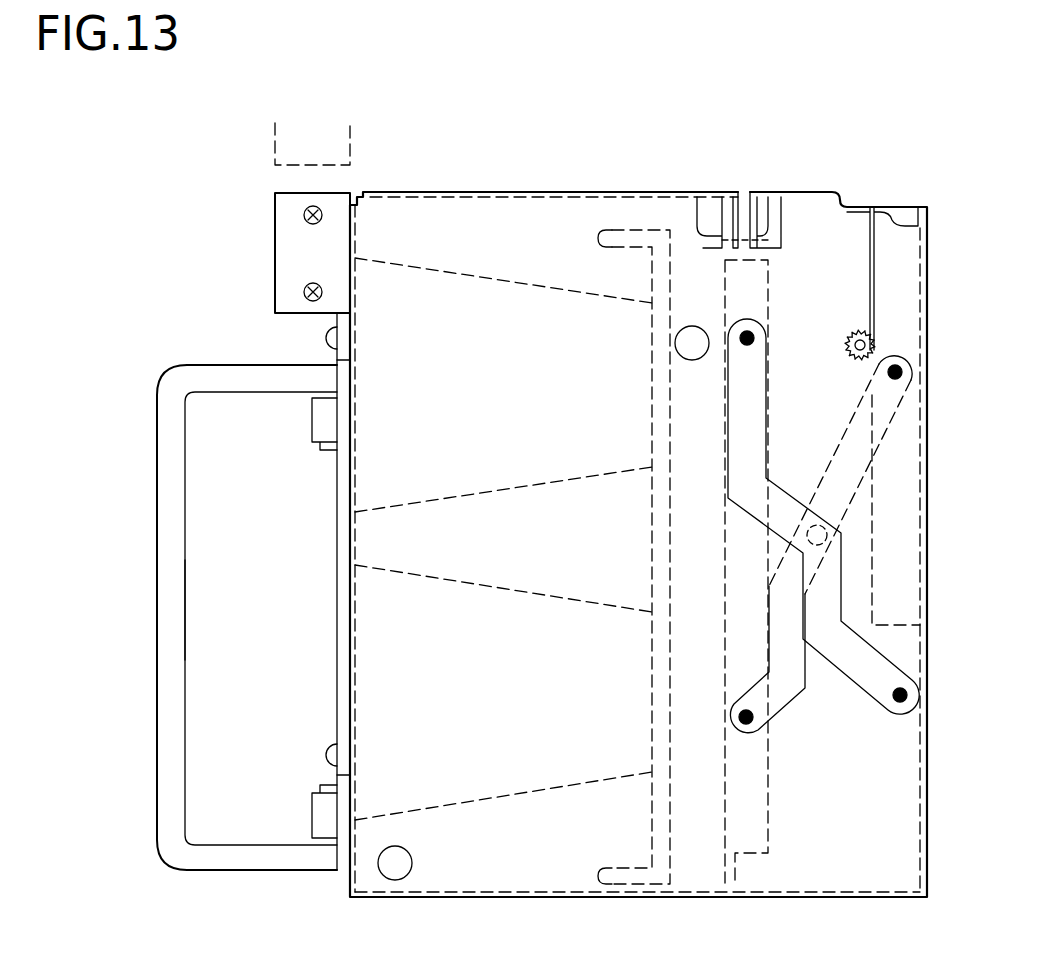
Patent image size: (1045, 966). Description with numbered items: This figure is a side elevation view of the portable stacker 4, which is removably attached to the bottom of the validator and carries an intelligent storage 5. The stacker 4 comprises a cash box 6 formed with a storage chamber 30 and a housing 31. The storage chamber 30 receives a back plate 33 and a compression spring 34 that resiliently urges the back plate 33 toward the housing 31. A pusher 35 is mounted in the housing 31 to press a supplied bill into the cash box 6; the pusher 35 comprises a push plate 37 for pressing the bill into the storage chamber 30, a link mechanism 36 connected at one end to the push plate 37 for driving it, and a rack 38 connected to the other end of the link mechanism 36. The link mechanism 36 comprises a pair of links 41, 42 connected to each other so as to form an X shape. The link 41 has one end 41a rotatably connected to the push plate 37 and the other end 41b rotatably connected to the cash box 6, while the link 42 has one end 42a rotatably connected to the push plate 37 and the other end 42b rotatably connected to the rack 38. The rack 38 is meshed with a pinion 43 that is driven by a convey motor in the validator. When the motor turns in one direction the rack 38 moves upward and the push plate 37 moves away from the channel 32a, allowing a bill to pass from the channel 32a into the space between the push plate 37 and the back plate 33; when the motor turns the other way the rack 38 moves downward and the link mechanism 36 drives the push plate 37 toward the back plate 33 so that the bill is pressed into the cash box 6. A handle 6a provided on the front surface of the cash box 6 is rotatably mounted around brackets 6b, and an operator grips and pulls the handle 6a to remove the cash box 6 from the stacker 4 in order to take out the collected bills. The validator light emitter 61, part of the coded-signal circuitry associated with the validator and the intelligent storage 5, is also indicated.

The stacker 4 is at (238, 302).
The intelligent storage 5 is at (292, 228).
The cash box 6 is at (337, 585).
The handle 6a is at (178, 578).
The brackets 6b is at (318, 425).
The storage chamber 30 is at (700, 876).
The housing 31 is at (818, 894).
The channel 32a is at (717, 237).
The back plate 33 is at (598, 238).
The compression spring 34 is at (478, 800).
The pusher 35 is at (802, 841).
The link mechanism 36 is at (832, 736).
The push plate 37 is at (740, 878).
The rack 38 is at (887, 222).
The link 41 is at (836, 665).
The one end of link 41a is at (740, 344).
The other end of link 41b is at (898, 708).
The link 42 is at (843, 468).
The one end of link 42a is at (738, 713).
The other end of link 42b is at (887, 368).
The pinion 43 is at (853, 337).
The validator light emitter 61 is at (350, 145).